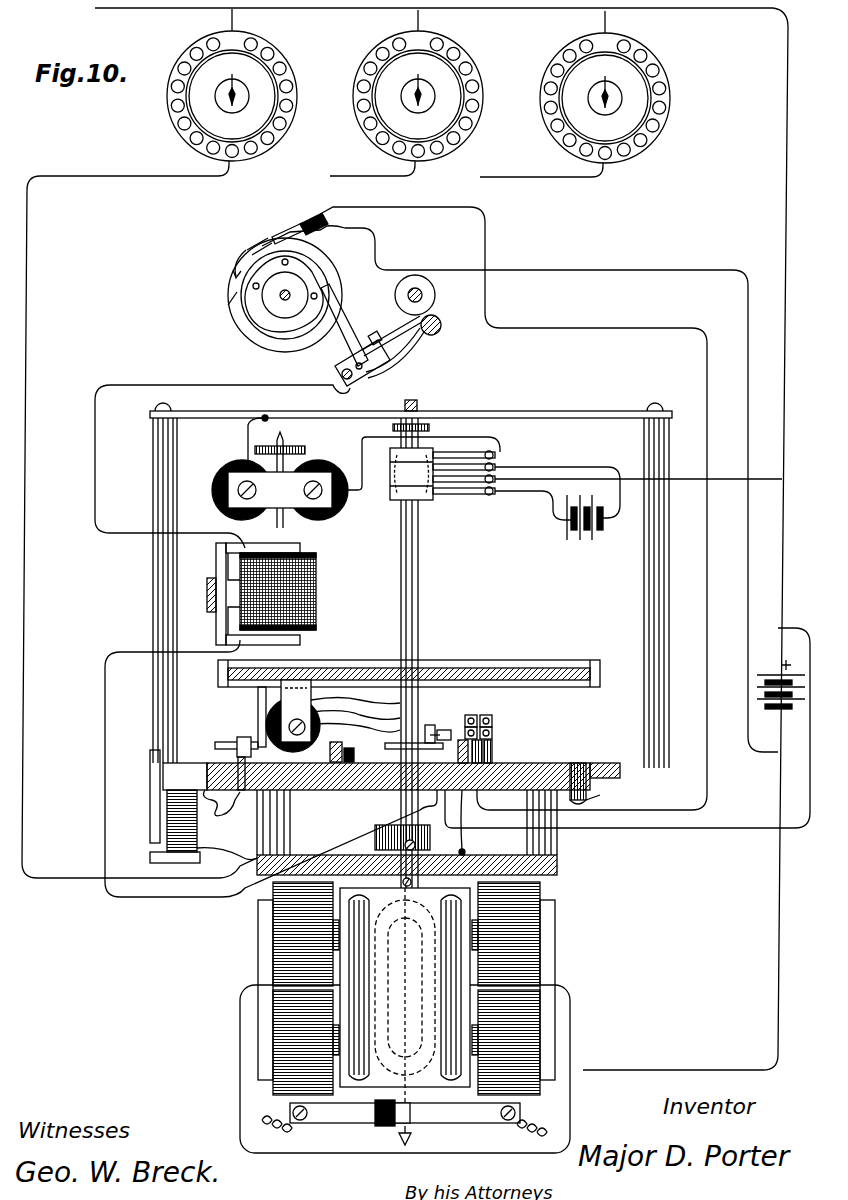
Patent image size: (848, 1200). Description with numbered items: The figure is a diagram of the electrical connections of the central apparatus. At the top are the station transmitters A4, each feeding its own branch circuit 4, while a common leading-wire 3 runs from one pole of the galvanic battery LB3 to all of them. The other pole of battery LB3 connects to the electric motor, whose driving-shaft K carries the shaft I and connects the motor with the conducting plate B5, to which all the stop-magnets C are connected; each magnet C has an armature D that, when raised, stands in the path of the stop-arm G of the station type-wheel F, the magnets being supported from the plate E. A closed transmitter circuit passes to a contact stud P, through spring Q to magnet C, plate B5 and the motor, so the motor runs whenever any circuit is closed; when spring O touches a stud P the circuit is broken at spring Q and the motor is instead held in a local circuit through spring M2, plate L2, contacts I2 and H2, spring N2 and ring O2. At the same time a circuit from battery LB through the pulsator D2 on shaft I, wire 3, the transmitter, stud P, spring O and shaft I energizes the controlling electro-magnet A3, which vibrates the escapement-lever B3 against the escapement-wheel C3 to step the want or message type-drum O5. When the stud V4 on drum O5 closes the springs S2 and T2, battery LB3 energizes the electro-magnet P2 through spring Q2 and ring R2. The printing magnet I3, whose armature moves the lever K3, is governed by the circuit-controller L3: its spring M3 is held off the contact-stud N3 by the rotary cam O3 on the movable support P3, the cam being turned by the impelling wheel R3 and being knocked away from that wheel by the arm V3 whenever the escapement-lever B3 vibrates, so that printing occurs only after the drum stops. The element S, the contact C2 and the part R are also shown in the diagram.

The common leading-wire 3 is at (441, 539).
The separate branches or circuits 4 is at (312, 516).
The transmitter A4 is at (424, 86).
The escapement-lever B3 is at (257, 304).
The want or message type-drum O5 is at (223, 291).
The operating stud or projection V4 is at (247, 255).
The contact-spring S2 is at (489, 508).
The contact-spring T2 is at (318, 233).
The arm V3 is at (342, 337).
The spring M3 is at (248, 444).
The vibratory or movable support P3 is at (392, 335).
The contact-stud N3 is at (370, 333).
The circuit-controller L3 is at (400, 353).
The rotary impelling disk or wheel R3 is at (430, 288).
The rotary cam O3 is at (440, 318).
The shaft I is at (419, 570).
The pulsator D2 is at (586, 486).
The battery LB is at (585, 526).
The escapement-wheel C3 is at (287, 443).
The controlling electro-magnet A3 is at (326, 470).
The electro-magnet I3 is at (316, 586).
The lever K3 is at (205, 585).
The room or station indicating type-wheel F is at (540, 665).
The stop-arm G is at (258, 704).
The electro-magnet P2 is at (333, 716).
The contact bar S is at (222, 743).
The spring O is at (241, 736).
The contact stud or block P is at (250, 750).
The armature D is at (152, 775).
The electro-magnet C is at (198, 828).
The spring Q is at (222, 803).
The contact-plate H2 is at (330, 749).
The contact-plate I2 is at (347, 752).
The contact C2 is at (407, 731).
The circular plate L2 is at (425, 730).
The spring M2 is at (415, 752).
The spring Q2 is at (492, 730).
The spring N2 is at (492, 742).
The ring O2 is at (483, 758).
The ring of metal R2 is at (495, 764).
The plate E is at (610, 792).
The galvanic battery LB3 is at (627, 728).
The plate B5 is at (407, 856).
The bearing block R is at (375, 838).
The driving-shaft K is at (400, 882).